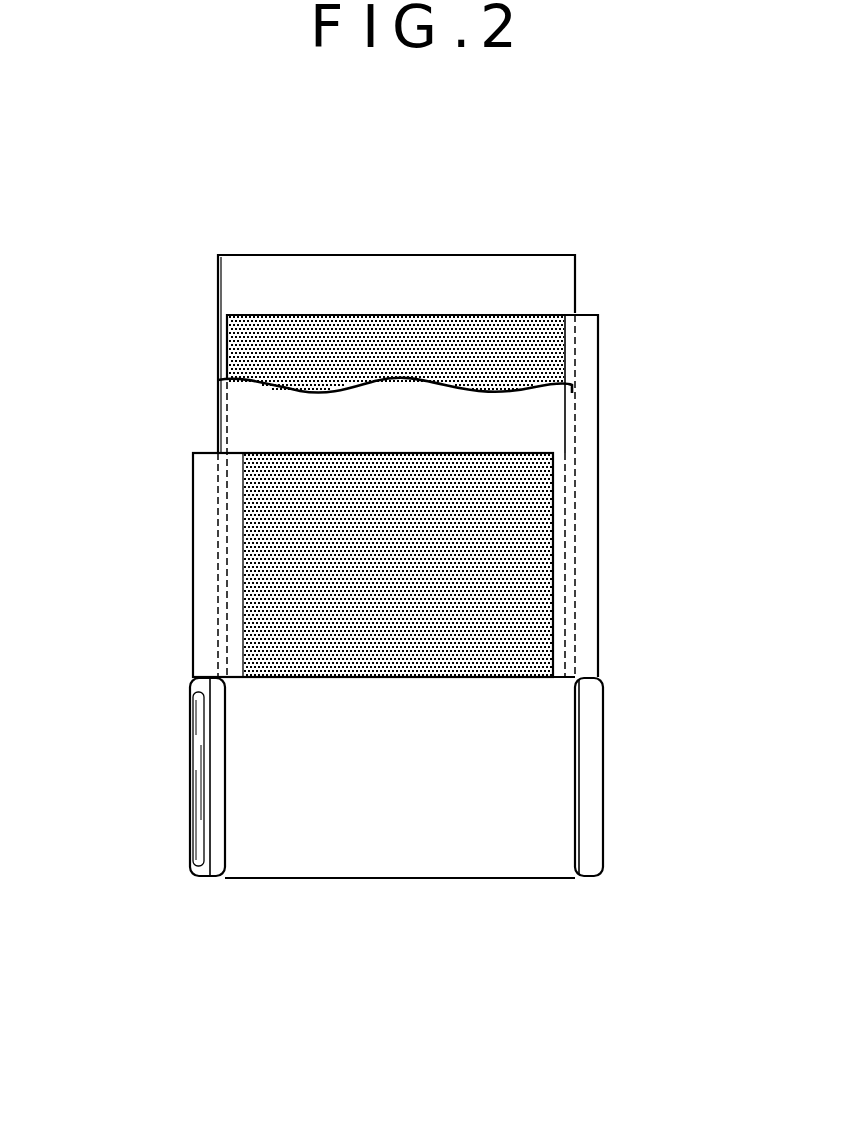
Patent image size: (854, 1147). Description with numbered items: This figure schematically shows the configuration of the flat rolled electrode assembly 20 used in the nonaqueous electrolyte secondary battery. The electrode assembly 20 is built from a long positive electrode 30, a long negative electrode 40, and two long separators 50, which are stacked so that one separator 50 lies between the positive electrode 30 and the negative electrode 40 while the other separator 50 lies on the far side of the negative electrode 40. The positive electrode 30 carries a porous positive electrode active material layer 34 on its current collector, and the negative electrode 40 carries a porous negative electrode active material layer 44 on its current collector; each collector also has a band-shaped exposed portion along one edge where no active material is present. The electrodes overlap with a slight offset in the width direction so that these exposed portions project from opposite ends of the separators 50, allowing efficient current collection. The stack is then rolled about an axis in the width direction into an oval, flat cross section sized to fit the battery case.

The electrode assembly 20 is at (299, 855).
The positive electrode 30 is at (308, 565).
The positive electrode active material layer 34 is at (302, 602).
The negative electrode 40 is at (475, 496).
The negative electrode active material layer 44 is at (510, 348).
The separator 50 is at (240, 279).